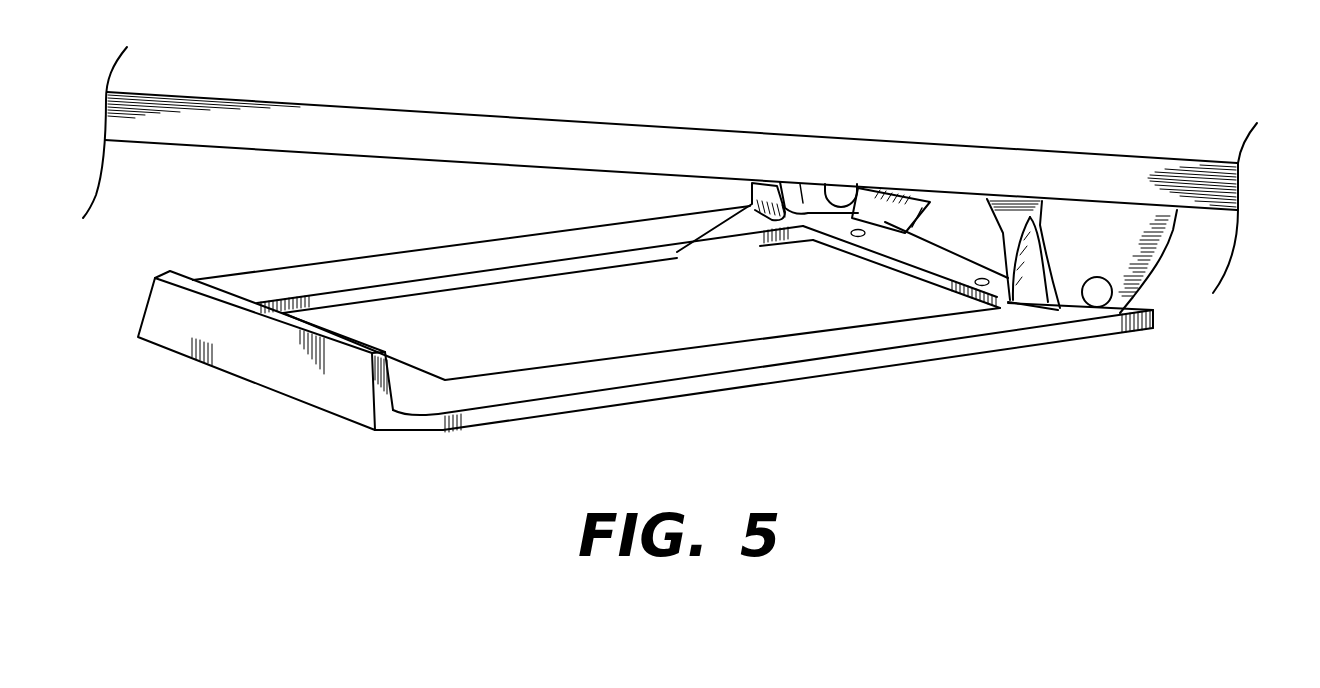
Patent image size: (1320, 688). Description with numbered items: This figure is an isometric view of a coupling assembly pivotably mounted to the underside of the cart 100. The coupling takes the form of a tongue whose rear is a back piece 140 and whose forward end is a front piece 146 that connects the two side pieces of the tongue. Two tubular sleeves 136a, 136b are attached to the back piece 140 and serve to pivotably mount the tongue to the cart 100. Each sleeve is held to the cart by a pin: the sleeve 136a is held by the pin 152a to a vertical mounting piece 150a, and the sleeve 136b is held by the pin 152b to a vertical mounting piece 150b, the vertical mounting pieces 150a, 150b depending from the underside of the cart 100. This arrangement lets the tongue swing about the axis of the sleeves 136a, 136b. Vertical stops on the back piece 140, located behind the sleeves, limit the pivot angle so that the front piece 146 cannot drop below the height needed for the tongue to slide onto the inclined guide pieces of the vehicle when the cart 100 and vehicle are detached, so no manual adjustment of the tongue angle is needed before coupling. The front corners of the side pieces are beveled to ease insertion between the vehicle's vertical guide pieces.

The cart 100 is at (181, 146).
The back piece 140 is at (900, 278).
The front piece 146 is at (417, 370).
The tubular sleeve 136a is at (1007, 300).
The tubular sleeve 136b is at (677, 258).
The vertical mounting piece 150a is at (1150, 278).
The vertical mounting piece 150b is at (752, 192).
The pin 152a is at (1090, 306).
The pin 152b is at (827, 190).